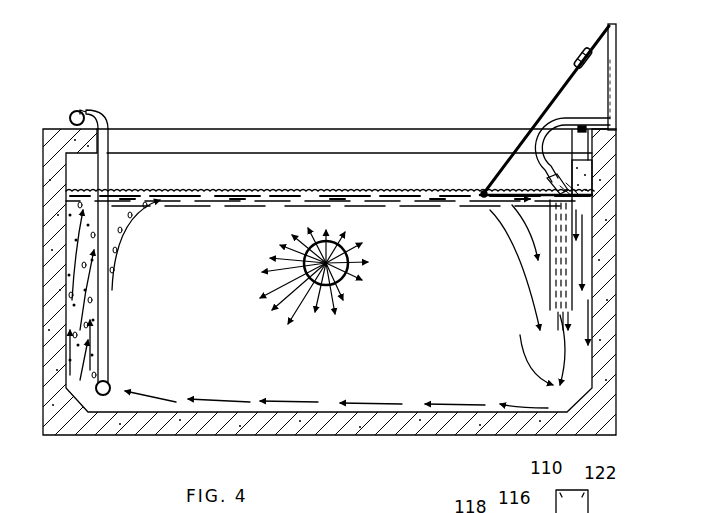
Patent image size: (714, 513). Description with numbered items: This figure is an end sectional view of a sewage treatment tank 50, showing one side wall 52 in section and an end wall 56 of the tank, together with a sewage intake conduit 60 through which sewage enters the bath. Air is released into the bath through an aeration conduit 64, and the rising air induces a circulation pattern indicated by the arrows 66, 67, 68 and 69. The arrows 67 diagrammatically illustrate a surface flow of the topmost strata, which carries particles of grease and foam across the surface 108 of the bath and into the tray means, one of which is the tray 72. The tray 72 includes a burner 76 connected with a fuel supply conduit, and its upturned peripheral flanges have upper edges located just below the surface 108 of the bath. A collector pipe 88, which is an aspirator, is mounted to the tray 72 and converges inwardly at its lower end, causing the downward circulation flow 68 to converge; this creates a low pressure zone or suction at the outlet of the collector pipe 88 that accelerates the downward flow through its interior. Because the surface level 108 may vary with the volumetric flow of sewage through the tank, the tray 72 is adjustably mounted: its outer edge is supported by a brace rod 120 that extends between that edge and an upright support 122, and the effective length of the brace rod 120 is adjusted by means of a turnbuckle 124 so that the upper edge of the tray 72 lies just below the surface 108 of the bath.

The sewage treatment tank 50 is at (620, 152).
The side wall 52 is at (617, 312).
The end wall 56 is at (205, 135).
The sewage intake conduit 60 is at (350, 262).
The aeration conduit 64 is at (110, 383).
The circulation arrows 66 is at (97, 287).
The surface flow arrows 67 is at (215, 206).
The downward circulation flow 68 is at (522, 238).
The circulation arrows 69 is at (310, 400).
The tray 72 is at (486, 191).
The burner 76 is at (592, 178).
The collector pipe 88 is at (549, 270).
The surface of the bath 108 is at (196, 190).
The brace rod 120 is at (538, 118).
The upright support 122 is at (617, 73).
The turnbuckle 124 is at (575, 54).